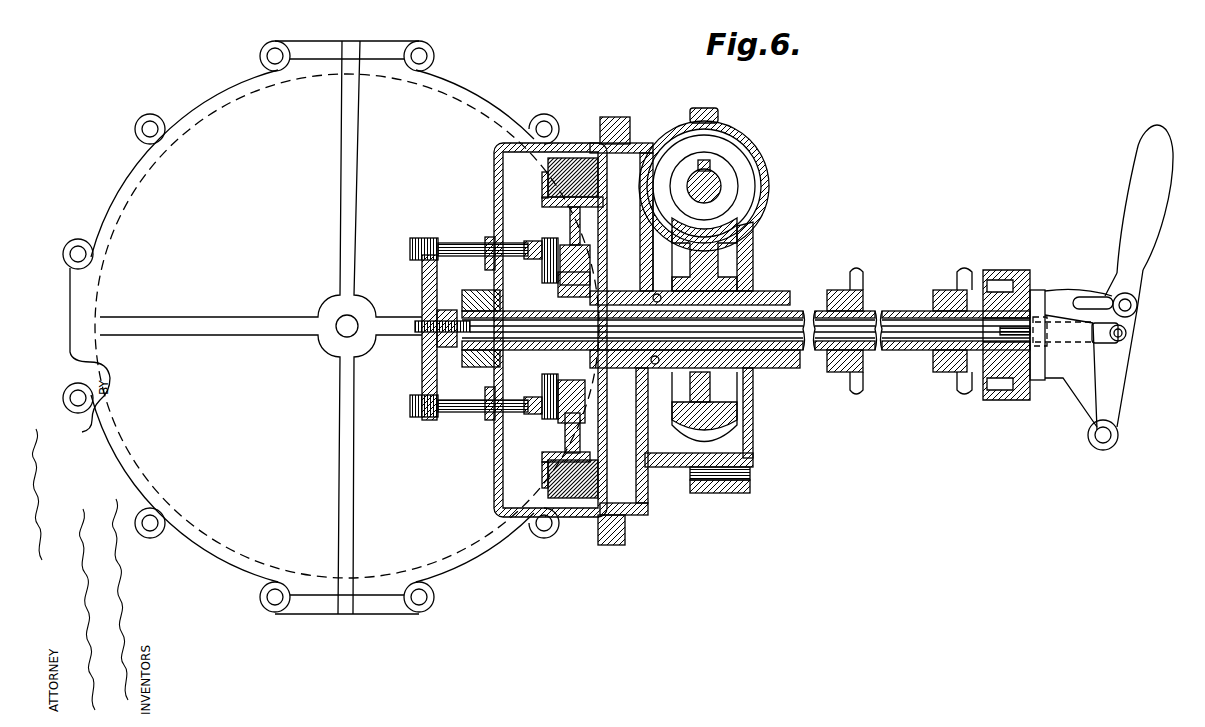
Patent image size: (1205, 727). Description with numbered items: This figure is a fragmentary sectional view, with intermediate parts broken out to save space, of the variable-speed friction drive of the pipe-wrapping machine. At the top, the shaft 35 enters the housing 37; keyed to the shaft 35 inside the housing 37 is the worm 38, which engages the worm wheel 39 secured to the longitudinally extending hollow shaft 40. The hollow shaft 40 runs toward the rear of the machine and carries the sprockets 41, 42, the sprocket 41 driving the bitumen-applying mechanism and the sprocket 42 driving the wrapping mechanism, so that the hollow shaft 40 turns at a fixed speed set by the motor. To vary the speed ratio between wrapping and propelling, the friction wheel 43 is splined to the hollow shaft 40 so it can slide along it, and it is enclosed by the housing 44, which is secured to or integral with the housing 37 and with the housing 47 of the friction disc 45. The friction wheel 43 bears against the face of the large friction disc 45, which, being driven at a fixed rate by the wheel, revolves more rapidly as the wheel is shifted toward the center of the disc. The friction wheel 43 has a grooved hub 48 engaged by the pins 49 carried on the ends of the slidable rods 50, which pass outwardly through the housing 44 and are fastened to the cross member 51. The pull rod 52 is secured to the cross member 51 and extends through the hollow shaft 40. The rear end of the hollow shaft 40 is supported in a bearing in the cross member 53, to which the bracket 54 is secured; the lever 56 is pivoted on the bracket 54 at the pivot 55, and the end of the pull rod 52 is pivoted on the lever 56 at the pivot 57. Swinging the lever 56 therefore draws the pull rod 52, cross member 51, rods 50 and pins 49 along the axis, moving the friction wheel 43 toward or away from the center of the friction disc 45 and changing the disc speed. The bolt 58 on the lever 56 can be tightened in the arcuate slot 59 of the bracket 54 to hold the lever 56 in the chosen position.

The shaft 35 is at (708, 184).
The housing 37 is at (668, 463).
The worm 38 is at (738, 192).
The worm wheel 39 is at (727, 418).
The hollow shaft 40 is at (823, 350).
The sprocket 41 is at (860, 282).
The sprocket 42 is at (965, 282).
The friction wheel 43 is at (580, 503).
The housing 44 is at (532, 507).
The friction disc 45 is at (235, 557).
The housing 47 is at (315, 567).
The grooved hub 48 is at (533, 370).
The pins 49 is at (545, 245).
The slidable rods 50 is at (462, 245).
The cross member 51 is at (423, 362).
The pull rod 52 is at (1017, 337).
The cross member 53 is at (1010, 400).
The bracket 54 is at (1063, 375).
The pivot 55 is at (1103, 450).
The lever 56 is at (1120, 365).
The pivot 57 is at (1127, 333).
The bolt 58 is at (1137, 305).
The arcuate slot 59 is at (1090, 297).